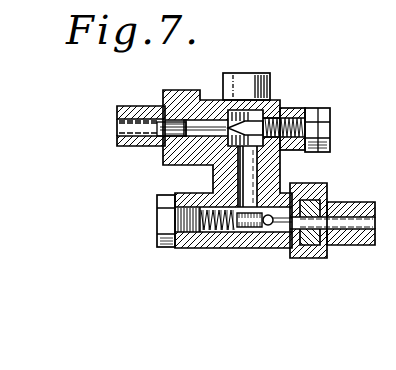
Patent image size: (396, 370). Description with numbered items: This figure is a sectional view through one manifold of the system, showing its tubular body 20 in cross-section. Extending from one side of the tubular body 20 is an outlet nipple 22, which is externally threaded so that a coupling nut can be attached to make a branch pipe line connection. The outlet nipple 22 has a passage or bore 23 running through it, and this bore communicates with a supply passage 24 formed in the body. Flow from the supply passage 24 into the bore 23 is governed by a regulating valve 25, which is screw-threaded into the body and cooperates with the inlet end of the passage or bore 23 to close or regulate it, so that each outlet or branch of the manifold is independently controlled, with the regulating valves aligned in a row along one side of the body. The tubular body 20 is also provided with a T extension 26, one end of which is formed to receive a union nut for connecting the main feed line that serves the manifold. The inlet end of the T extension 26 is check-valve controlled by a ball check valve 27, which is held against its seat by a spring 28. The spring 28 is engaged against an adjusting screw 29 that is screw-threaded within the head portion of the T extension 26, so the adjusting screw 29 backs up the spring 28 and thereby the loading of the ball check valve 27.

The tubular body 20 is at (218, 100).
The outlet nipple 22 is at (141, 105).
The passage or bore 23 is at (172, 128).
The supply passage 24 is at (256, 142).
The regulating valve 25 is at (245, 128).
The T extension 26 is at (176, 247).
The ball check valve 27 is at (268, 226).
The spring 28 is at (240, 246).
The adjusting screw 29 is at (215, 233).